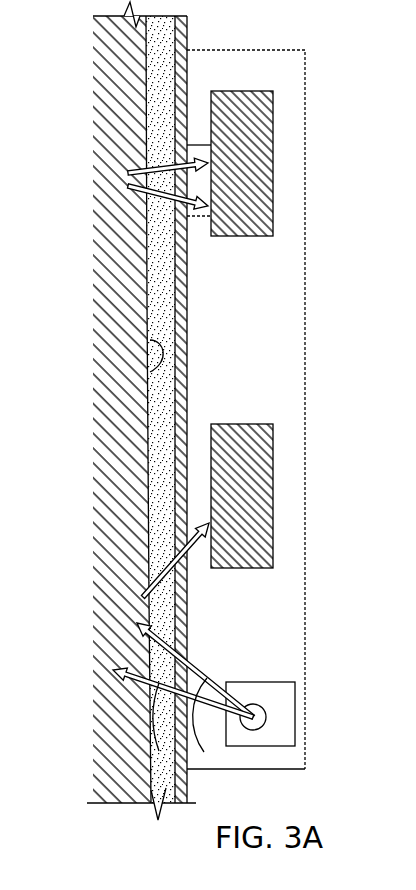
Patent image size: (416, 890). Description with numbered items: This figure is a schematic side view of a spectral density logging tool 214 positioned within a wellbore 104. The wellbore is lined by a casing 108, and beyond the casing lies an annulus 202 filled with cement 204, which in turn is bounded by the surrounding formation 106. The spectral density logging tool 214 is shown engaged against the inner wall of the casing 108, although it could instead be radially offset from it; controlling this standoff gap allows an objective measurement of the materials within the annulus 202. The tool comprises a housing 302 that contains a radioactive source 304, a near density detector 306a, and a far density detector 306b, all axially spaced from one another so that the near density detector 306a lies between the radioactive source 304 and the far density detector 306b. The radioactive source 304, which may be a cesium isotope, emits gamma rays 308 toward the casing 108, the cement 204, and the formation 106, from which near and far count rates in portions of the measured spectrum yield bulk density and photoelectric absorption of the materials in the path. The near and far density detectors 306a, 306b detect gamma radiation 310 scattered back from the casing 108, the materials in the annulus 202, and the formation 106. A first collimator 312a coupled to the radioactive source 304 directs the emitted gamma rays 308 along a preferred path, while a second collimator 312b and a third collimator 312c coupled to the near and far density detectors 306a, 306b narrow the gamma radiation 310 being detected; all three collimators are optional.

The wellbore 104 is at (146, 93).
The formation 106 is at (133, 239).
The casing 108 is at (166, 284).
The annulus 202 is at (150, 340).
The cement 204 is at (160, 406).
The spectral density logging tool 214 is at (323, 78).
The housing 302 is at (305, 316).
The radioactive source 304 is at (295, 713).
The near density detector 306a is at (273, 512).
The far density detector 306b is at (273, 176).
The gamma rays 308 is at (148, 723).
The gamma radiation 310 is at (135, 170).
The first collimator 312a is at (224, 681).
The second collimator 312b is at (198, 555).
The third collimator 312c is at (203, 217).